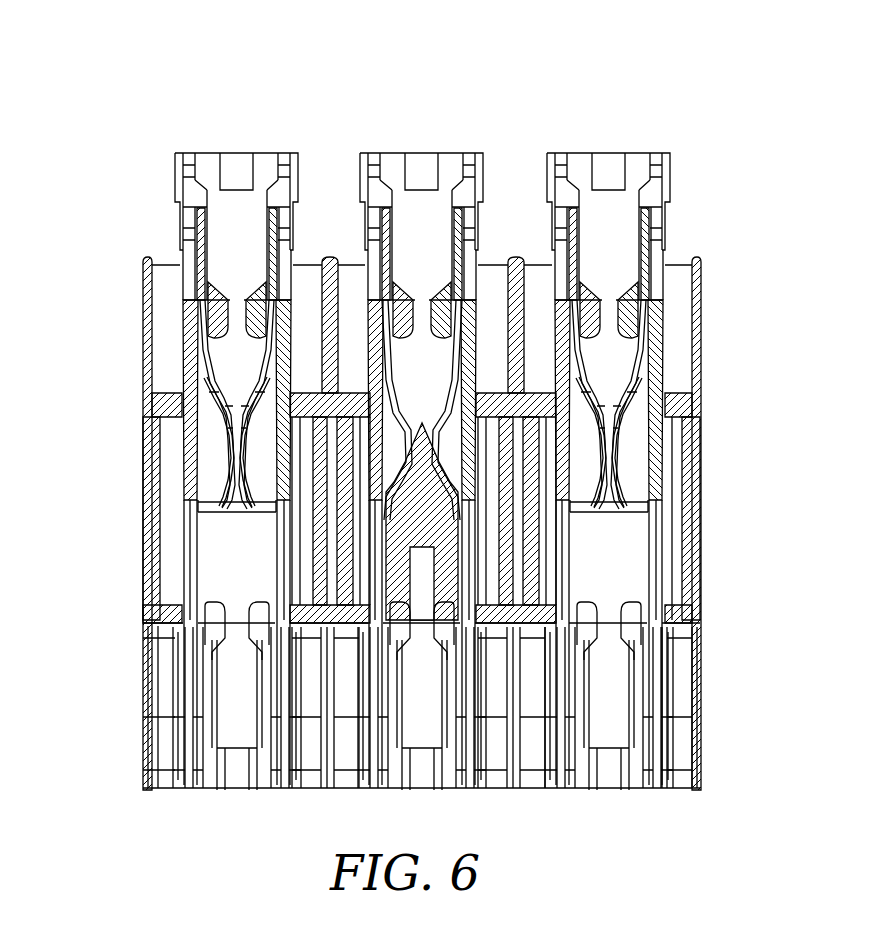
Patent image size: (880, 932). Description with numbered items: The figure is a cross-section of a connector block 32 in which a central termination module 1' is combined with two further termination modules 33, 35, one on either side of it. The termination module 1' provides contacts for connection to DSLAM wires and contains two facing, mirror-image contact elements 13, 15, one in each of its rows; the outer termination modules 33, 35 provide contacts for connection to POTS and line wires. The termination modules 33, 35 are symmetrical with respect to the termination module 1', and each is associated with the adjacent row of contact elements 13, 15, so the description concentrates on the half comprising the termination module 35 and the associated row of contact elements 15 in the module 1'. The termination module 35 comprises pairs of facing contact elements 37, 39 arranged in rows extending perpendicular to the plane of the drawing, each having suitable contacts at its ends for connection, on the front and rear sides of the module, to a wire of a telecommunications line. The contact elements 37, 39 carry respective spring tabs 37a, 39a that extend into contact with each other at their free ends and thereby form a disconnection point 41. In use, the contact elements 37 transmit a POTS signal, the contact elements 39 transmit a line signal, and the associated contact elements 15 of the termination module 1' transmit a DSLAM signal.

The termination module 1' is at (416, 424).
The contact element 13 is at (460, 253).
The contact element 15 is at (378, 247).
The connector block 32 is at (612, 88).
The termination module 33 is at (672, 172).
The termination module 35 is at (172, 160).
The contact element 37 is at (193, 242).
The spring tab 37a is at (202, 366).
The contact element 39 is at (268, 437).
The spring tab 39a is at (253, 352).
The disconnection point 41 is at (230, 493).